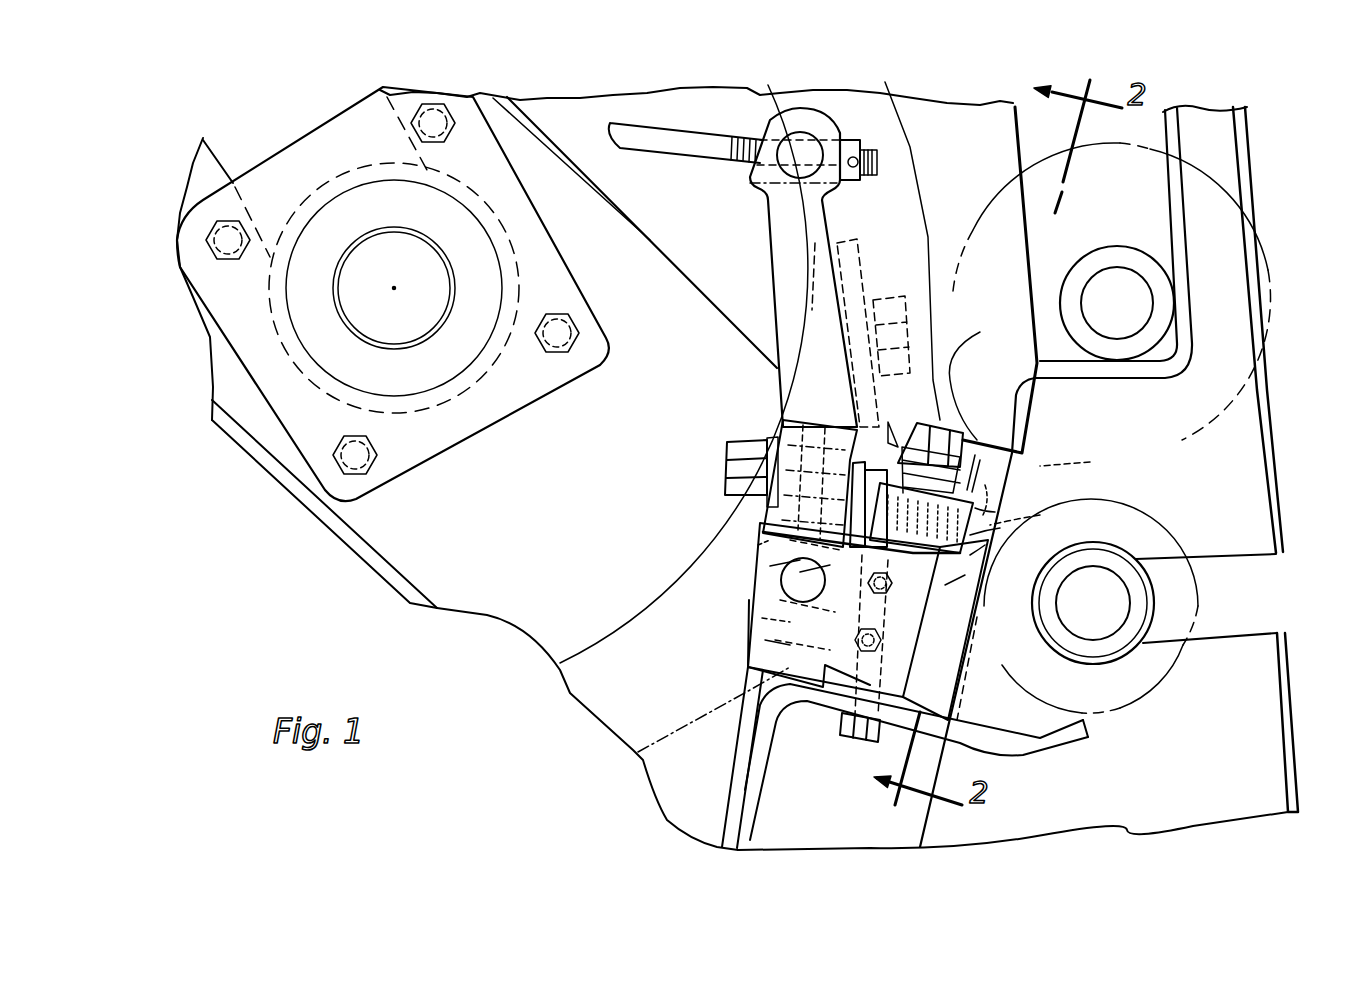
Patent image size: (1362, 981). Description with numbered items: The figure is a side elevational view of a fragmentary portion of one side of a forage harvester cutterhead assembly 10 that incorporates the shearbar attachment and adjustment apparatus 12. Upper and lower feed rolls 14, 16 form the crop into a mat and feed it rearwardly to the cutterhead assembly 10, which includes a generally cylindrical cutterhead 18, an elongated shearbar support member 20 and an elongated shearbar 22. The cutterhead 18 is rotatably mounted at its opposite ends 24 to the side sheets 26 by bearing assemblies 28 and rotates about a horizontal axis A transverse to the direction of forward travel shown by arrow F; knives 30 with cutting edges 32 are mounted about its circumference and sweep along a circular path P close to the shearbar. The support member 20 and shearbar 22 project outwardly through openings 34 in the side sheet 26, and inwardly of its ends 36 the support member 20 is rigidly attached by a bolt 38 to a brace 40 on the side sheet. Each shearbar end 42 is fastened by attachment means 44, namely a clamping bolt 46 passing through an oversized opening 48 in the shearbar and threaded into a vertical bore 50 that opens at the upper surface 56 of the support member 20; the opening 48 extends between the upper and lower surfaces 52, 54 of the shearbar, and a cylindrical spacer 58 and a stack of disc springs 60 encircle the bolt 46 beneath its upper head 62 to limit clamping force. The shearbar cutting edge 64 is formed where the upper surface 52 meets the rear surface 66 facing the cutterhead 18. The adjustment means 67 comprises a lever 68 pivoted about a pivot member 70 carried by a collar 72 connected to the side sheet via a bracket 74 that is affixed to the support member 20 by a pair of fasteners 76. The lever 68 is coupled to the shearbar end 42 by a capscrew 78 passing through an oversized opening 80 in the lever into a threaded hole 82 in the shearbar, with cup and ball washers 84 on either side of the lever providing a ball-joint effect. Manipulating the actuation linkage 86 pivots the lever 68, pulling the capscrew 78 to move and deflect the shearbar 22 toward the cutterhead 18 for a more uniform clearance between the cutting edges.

The cutterhead assembly 10 is at (478, 740).
The shearbar attachment and adjustment apparatus 12 is at (690, 513).
The upper feed roll 14 is at (1280, 267).
The lower feed roll 16 is at (1154, 686).
The cutterhead 18 is at (597, 647).
The shearbar support member 20 is at (930, 660).
The shearbar 22 is at (993, 504).
The opposite ends of cutterhead 24 is at (425, 333).
The side sheet 26 is at (982, 280).
The bearing assembly 28 is at (480, 293).
The knife 30 is at (863, 275).
The cutting edge of knife 32 is at (893, 430).
The opening in side sheet 34 is at (985, 468).
The end of support member 36 is at (965, 575).
The bolt 38 is at (855, 742).
The brace 40 is at (833, 707).
The end of shearbar 42 is at (1000, 528).
The attachment means 44 is at (963, 415).
The clamping bolt 46 is at (905, 585).
The opening in shearbar 48 is at (990, 488).
The vertical bore 50 is at (905, 625).
The upper surface of shearbar 52 is at (1090, 462).
The lower surface of shearbar 54 is at (985, 545).
The upper surface of support member 56 is at (975, 508).
The cylindrical spacer 58 is at (972, 492).
The disc springs 60 is at (967, 490).
The upper head of clamping bolt 62 is at (975, 380).
The cutting edge of shearbar 64 is at (782, 415).
The rear surface of shearbar 66 is at (800, 572).
The adjustment means 67 is at (762, 364).
The lever 68 is at (783, 260).
The pivot member 70 is at (770, 566).
The collar 72 is at (762, 618).
The bracket 74 is at (752, 727).
The fasteners 76 is at (765, 640).
The capscrew 78 is at (803, 580).
The oversized opening in lever 80 is at (758, 545).
The internally-threaded hole 82 is at (1040, 515).
The cup and ball washers 84 is at (725, 471).
The actuation linkage 86 is at (707, 148).
The axis A is at (394, 288).
The circular path P is at (930, 238).
The arrow indicating direction of forward travel F is at (1298, 375).